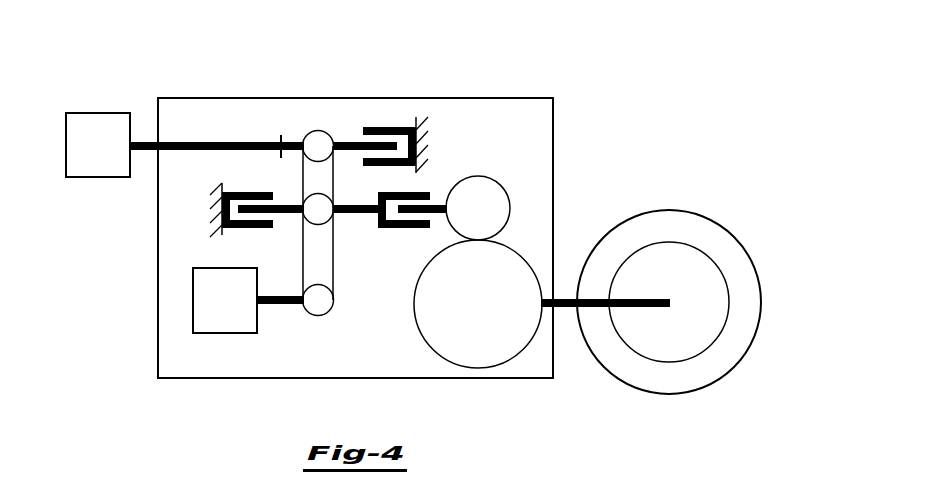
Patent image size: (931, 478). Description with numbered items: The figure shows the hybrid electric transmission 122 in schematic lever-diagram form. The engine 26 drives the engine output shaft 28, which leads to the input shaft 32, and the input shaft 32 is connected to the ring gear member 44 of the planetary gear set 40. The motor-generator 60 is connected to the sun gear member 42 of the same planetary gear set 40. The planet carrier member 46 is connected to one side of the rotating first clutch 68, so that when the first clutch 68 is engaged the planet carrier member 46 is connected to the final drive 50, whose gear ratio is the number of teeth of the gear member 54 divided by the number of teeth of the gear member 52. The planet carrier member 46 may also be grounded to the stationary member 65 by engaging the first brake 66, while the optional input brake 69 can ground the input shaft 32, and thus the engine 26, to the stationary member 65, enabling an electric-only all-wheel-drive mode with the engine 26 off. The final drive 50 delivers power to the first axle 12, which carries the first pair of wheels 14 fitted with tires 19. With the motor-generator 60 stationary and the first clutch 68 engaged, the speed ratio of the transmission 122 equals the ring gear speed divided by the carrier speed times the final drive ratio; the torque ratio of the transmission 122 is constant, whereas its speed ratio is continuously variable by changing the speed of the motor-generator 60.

The first axle 12 is at (567, 298).
The first pair of wheels 14 is at (670, 242).
The tires 19 is at (762, 302).
The engine 26 is at (106, 153).
The engine output shaft 28 is at (264, 152).
The input shaft 32 is at (284, 141).
The planetary gear set 40 is at (335, 255).
The sun gear member 42 is at (334, 300).
The ring gear member 44 is at (318, 130).
The planet carrier member 46 is at (330, 220).
The final drive 50 is at (502, 250).
The gear member 52 is at (502, 185).
The gear member 54 is at (487, 311).
The motor-generator 60 is at (234, 310).
The stationary member 65 is at (427, 140).
The first brake 66 is at (284, 226).
The rotating first clutch 68 is at (436, 226).
The input brake 69 is at (352, 126).
The hybrid electric transmission 122 is at (481, 97).